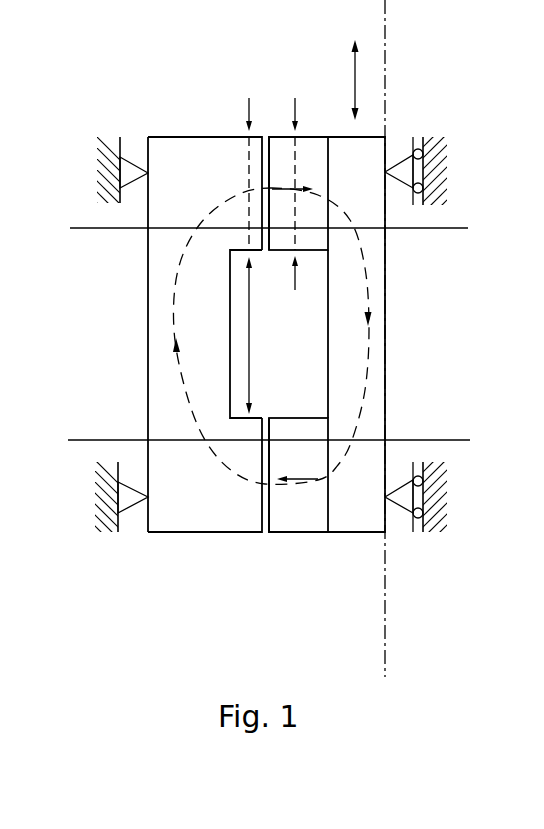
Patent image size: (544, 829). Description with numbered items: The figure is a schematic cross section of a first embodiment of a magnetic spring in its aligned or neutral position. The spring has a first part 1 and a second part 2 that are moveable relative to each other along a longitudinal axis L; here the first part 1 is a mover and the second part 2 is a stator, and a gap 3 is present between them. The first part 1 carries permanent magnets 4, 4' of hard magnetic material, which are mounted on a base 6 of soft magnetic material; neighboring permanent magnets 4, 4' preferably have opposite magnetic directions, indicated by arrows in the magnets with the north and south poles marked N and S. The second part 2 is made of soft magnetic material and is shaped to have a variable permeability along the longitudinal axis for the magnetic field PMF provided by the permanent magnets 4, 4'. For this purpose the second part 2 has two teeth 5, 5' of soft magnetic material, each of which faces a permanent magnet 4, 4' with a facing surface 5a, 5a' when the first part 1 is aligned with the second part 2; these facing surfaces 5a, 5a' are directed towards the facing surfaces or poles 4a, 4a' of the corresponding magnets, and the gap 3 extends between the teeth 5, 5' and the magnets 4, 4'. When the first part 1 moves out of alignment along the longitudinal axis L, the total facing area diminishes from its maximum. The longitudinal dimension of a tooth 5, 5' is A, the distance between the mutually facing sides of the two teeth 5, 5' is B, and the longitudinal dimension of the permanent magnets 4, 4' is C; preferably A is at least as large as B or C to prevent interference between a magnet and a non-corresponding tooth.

The first part 1 is at (340, 556).
The second part 2 is at (187, 556).
The gap 3 is at (264, 546).
The permanent magnet 4 is at (298, 523).
The permanent magnet 4' is at (298, 146).
The tooth 5 is at (205, 523).
The tooth 5' is at (205, 146).
The base 6 is at (372, 408).
The facing surface or pole of permanent magnet 4a is at (383, 440).
The facing surface or pole of permanent magnet 4a' is at (386, 228).
The facing surface of tooth 5a is at (151, 440).
The facing surface of tooth 5a' is at (151, 228).
The magnetic field PMF is at (368, 347).
The longitudinal axis L is at (385, 615).
The dimension of tooth in longitudinal direction A is at (249, 105).
The distance between neighboring teeth B is at (249, 335).
The dimension of permanent magnet in longitudinal direction C is at (295, 184).